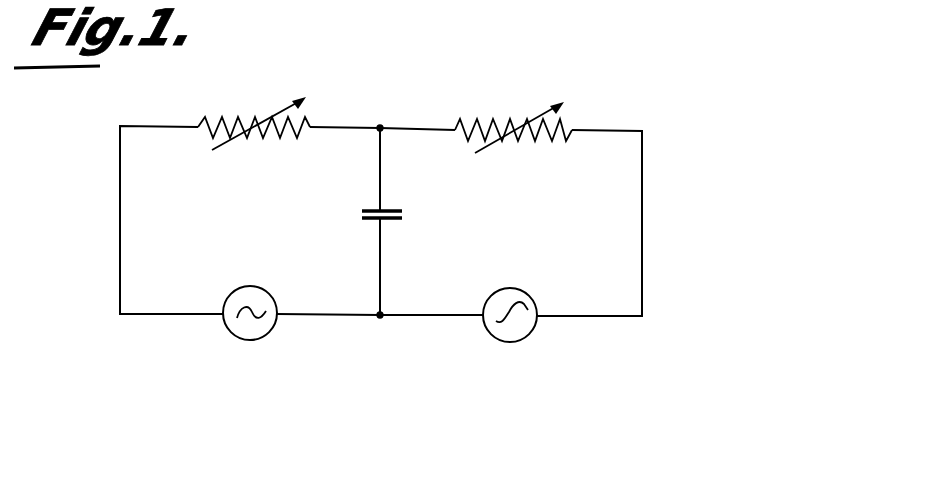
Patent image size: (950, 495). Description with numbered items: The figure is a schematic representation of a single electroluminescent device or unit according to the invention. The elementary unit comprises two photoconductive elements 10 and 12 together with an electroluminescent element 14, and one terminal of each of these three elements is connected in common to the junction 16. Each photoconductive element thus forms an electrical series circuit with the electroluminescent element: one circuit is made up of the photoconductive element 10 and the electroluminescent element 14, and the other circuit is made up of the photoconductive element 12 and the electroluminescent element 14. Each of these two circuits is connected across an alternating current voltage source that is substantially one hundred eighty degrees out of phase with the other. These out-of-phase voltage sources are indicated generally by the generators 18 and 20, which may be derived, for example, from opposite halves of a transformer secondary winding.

The photoconductive element 10 is at (228, 120).
The photoconductive element 12 is at (500, 118).
The electroluminescent element 14 is at (396, 210).
The junction 16 is at (382, 127).
The generator 18 is at (240, 340).
The generator 20 is at (510, 342).